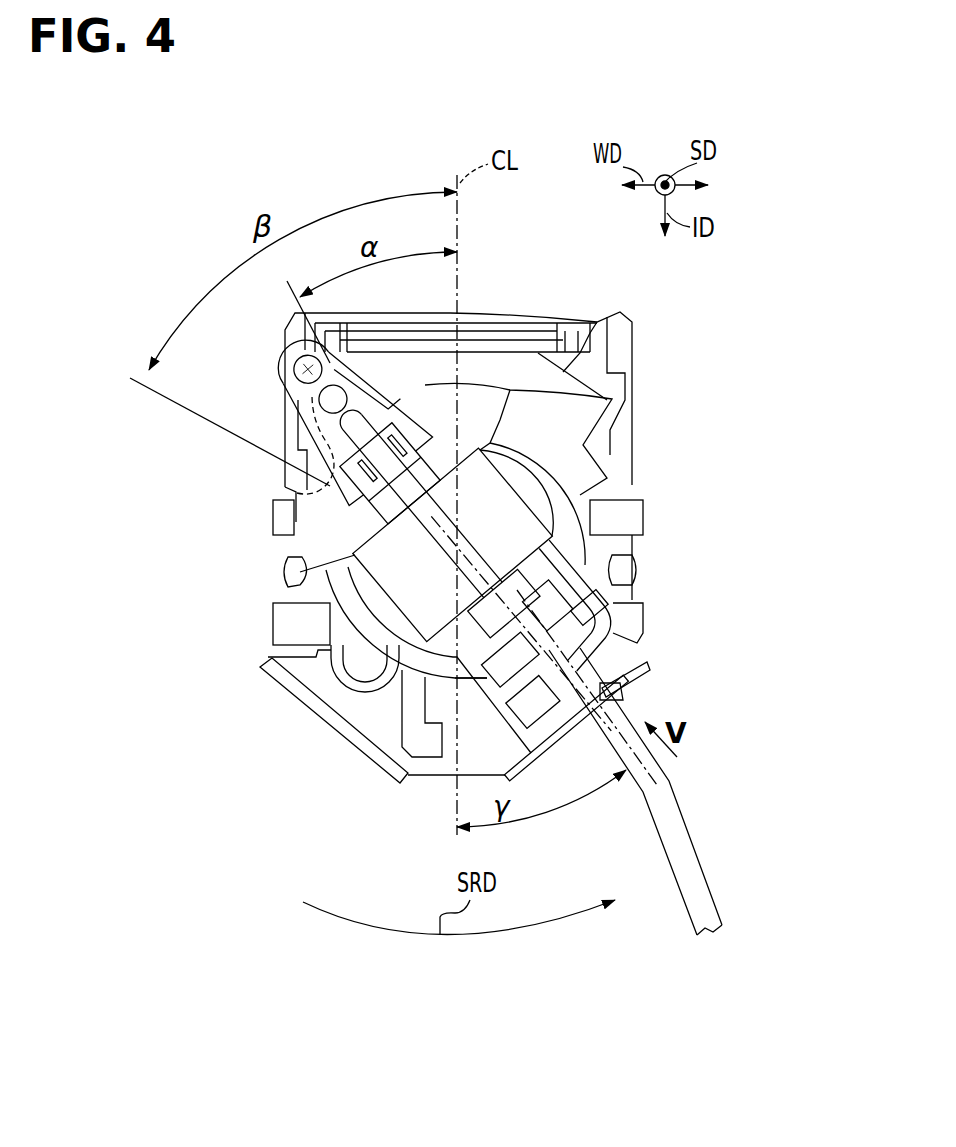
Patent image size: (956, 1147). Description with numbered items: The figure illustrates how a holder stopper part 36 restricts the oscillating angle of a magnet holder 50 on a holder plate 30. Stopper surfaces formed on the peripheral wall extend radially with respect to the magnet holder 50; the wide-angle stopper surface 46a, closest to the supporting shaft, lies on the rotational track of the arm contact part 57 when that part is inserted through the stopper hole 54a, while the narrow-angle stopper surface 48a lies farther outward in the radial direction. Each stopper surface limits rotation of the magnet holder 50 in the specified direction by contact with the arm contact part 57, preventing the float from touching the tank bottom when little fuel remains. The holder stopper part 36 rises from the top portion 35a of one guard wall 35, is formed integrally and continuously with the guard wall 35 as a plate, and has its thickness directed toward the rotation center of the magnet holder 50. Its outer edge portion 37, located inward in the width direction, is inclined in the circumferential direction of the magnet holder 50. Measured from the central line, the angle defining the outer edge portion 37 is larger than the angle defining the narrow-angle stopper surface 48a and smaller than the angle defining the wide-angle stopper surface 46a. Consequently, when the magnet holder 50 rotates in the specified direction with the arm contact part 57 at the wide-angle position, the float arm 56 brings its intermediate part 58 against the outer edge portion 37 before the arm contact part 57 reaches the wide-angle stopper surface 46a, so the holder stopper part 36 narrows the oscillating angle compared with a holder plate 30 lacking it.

The holder plate 30 is at (632, 323).
The narrow-angle stopper surface 48a is at (325, 352).
The magnet holder 50 is at (605, 398).
The arm contact part 57 is at (307, 369).
The stopper hole 54a is at (332, 398).
The wide-angle stopper surface 46a is at (297, 493).
The holder stopper part 36 is at (630, 657).
The intermediate part 58 is at (620, 683).
The outer edge portion 37 is at (617, 700).
The guard wall 35 is at (567, 728).
The top portion 35a is at (540, 755).
The float arm 56 is at (705, 880).